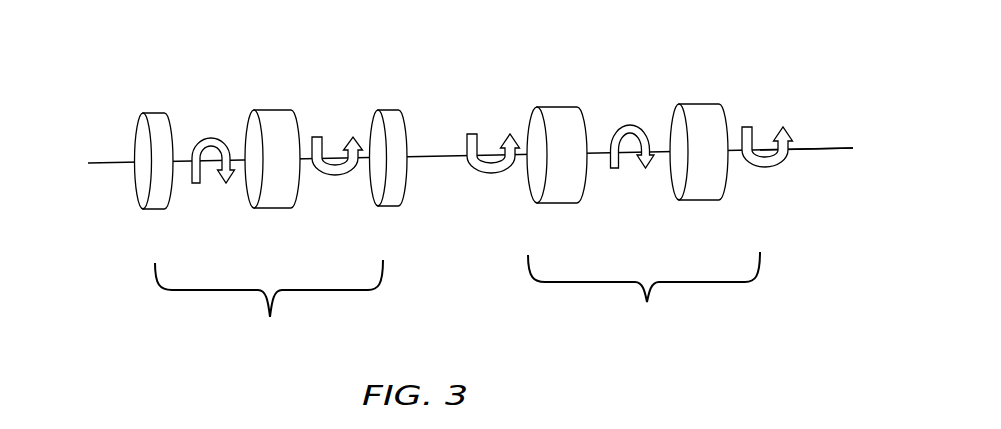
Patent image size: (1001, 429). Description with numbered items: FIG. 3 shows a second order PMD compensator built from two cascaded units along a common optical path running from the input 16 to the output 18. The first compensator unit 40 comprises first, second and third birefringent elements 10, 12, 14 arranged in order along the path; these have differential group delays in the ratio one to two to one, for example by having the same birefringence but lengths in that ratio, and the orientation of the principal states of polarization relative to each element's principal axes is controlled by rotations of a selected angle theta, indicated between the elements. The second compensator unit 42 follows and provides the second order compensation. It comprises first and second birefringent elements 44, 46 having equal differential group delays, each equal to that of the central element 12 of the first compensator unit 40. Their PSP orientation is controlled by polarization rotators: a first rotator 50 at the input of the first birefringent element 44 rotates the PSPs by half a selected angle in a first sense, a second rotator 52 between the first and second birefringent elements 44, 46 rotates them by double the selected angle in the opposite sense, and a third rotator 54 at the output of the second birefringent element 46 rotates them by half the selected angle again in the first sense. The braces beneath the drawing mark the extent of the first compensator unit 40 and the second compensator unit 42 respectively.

The first birefringent element 10 is at (157, 112).
The second birefringent element 12 is at (278, 110).
The third birefringent element 14 is at (387, 108).
The input 16 is at (100, 162).
The output 18 is at (833, 148).
The first compensator unit 40 is at (257, 199).
The second compensator unit 42 is at (630, 188).
The first birefringent element of second compensator unit 44 is at (557, 107).
The second birefringent element of second compensator unit 46 is at (707, 102).
The first rotator 50 is at (497, 172).
The second rotator 52 is at (613, 170).
The third rotator 54 is at (767, 167).